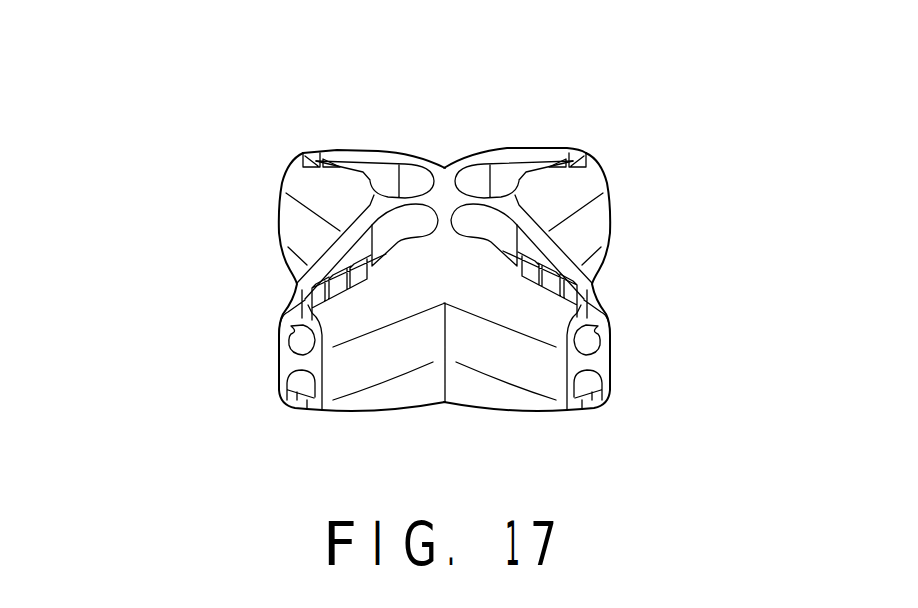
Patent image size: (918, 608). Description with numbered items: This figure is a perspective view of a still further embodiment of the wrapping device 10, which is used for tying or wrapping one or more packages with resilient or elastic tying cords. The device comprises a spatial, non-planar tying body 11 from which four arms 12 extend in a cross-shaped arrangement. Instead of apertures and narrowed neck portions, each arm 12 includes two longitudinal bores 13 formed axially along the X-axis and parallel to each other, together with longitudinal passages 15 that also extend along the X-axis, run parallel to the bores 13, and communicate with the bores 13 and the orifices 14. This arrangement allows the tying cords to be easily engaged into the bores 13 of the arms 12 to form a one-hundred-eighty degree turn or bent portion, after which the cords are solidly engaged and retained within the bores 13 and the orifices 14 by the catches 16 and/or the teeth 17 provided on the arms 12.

The wrapping device 10 is at (540, 65).
The tying body 11 is at (468, 147).
The arms 12 is at (345, 126).
The longitudinal bores 13 is at (295, 337).
The orifice 14 is at (413, 177).
The longitudinal passage 15 is at (332, 251).
The catches 16 is at (290, 312).
The teeth 17 is at (302, 278).